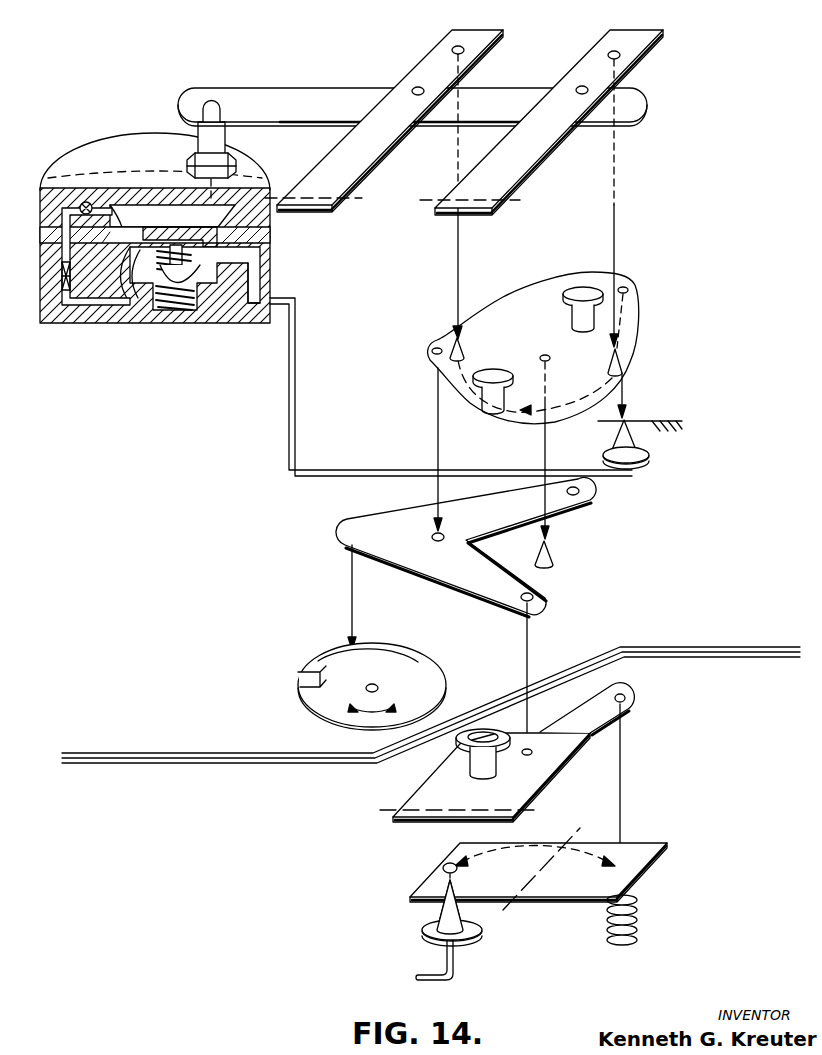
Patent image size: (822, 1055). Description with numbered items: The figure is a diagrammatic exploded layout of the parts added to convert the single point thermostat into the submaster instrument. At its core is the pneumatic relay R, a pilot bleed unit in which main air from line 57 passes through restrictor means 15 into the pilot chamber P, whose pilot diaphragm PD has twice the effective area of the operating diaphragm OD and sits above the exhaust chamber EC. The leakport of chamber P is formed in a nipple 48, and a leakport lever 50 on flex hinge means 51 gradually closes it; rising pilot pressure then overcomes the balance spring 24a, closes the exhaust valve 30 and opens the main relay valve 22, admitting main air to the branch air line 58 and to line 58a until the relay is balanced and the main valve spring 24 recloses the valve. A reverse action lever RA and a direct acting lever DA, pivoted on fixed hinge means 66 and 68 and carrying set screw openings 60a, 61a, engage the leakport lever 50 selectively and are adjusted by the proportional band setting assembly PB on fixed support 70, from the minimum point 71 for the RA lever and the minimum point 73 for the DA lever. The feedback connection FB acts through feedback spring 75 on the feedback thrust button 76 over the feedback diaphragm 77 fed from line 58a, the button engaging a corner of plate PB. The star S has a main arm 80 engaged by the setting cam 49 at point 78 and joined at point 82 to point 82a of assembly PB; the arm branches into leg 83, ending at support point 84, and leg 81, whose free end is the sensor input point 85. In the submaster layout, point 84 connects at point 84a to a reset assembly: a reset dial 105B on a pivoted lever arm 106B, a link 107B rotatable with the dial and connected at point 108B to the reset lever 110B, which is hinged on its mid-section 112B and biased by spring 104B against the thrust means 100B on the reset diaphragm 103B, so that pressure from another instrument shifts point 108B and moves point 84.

The pneumatic relay R is at (142, 150).
The restrictor means 15 is at (90, 200).
The pilot diaphragm PD is at (126, 226).
The pilot chamber P is at (150, 226).
The exhaust chamber EC is at (236, 203).
The nipple 48 is at (224, 142).
The leakport lever 50 is at (286, 104).
The flex hinge means 51 is at (344, 100).
The reverse action lever RA is at (462, 32).
The direct acting lever DA is at (645, 33).
The arm hole 60a is at (414, 95).
The arm hole 61a is at (578, 92).
The fixed hinge means 66 is at (302, 205).
The fixed hinge means 68 is at (474, 200).
The balance spring 24a is at (262, 258).
The main air line 57 is at (66, 323).
The operating diaphragm OD is at (138, 262).
The main relay valve 22 is at (163, 278).
The main valve spring 24 is at (178, 300).
The exhaust valve 30 is at (186, 264).
The branch air line 58 is at (256, 320).
The line 58a is at (293, 434).
The proportional band setting assembly PB is at (530, 285).
The point of the PB assembly 82a is at (432, 353).
The minimum point 71 is at (448, 342).
The minimum point 73 is at (620, 372).
The feedback spring 75 is at (630, 422).
The feedback connection FB is at (630, 437).
The feedback thrust button 76 is at (648, 452).
The feedback diaphragm 77 is at (634, 466).
The main arm 80 is at (466, 536).
The leg 83 is at (500, 490).
The leg 81 is at (452, 578).
The star S is at (397, 522).
The point 82 is at (444, 534).
The input point 85 is at (586, 496).
The support point 84 is at (552, 600).
The fixed support 70 is at (554, 552).
The point 78 is at (344, 646).
The setting cam 49 is at (302, 710).
The pivoted lever arm 106B is at (430, 786).
The reset dial 105B is at (458, 748).
The point 84a is at (532, 757).
The link 107B is at (588, 712).
The point 108B is at (633, 710).
The mid-section hinge 112B is at (524, 886).
The reset lever 110B is at (440, 872).
The thrust means 100B is at (443, 918).
The reset diaphragm 103B is at (424, 936).
The spring 104B is at (642, 912).